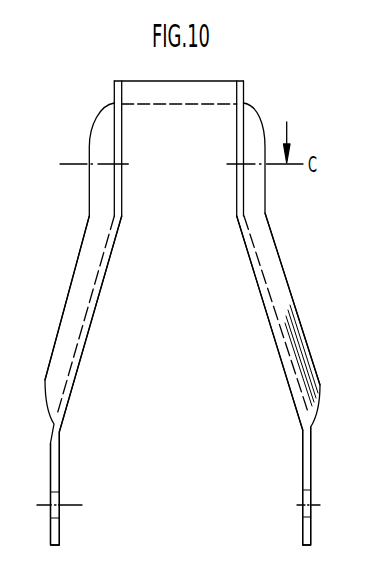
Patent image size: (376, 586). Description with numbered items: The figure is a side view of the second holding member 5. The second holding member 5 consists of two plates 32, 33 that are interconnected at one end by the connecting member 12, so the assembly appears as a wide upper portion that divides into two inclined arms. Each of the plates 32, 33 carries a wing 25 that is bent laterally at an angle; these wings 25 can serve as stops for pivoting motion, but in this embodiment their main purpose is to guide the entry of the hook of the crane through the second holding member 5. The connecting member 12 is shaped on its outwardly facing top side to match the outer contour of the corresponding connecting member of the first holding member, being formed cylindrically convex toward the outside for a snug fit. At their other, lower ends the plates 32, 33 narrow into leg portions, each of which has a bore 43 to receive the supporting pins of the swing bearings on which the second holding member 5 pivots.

The second holding member 5 is at (300, 246).
The connecting member 12 is at (172, 93).
The wings 25 is at (73, 312).
The plate 32 is at (85, 350).
The plate 33 is at (270, 323).
The bore 43 is at (58, 498).